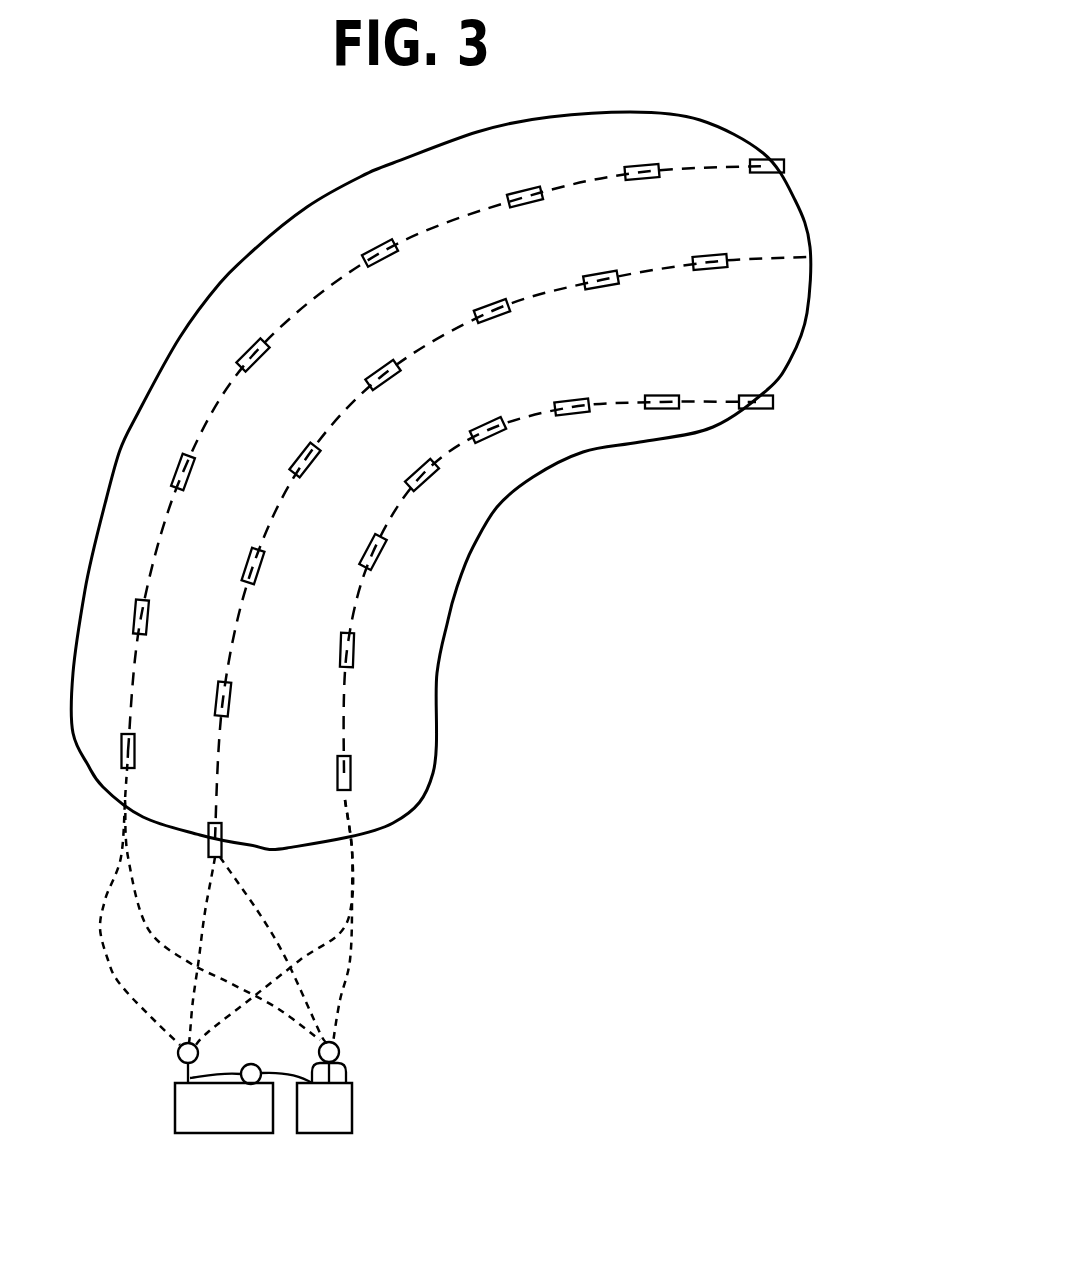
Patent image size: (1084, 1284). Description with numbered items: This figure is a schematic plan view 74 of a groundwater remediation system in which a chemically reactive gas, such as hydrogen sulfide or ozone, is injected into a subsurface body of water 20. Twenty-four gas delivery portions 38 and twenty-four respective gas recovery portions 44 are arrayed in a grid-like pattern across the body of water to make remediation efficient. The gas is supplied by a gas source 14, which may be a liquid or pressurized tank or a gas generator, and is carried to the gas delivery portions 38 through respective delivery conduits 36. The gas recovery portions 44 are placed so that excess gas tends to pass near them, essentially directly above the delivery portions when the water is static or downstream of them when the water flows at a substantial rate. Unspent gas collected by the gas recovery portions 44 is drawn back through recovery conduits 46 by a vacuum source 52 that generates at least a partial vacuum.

The schematic plan view 74 is at (790, 108).
The subsurface body of water 20 is at (814, 255).
The gas delivery portions 38 is at (453, 509).
The gas recovery portions 44 is at (767, 172).
The delivery conduit 36 is at (230, 1013).
The recovery conduits 46 is at (265, 1002).
The gas source 14 is at (242, 1125).
The vacuum source 52 is at (330, 1107).